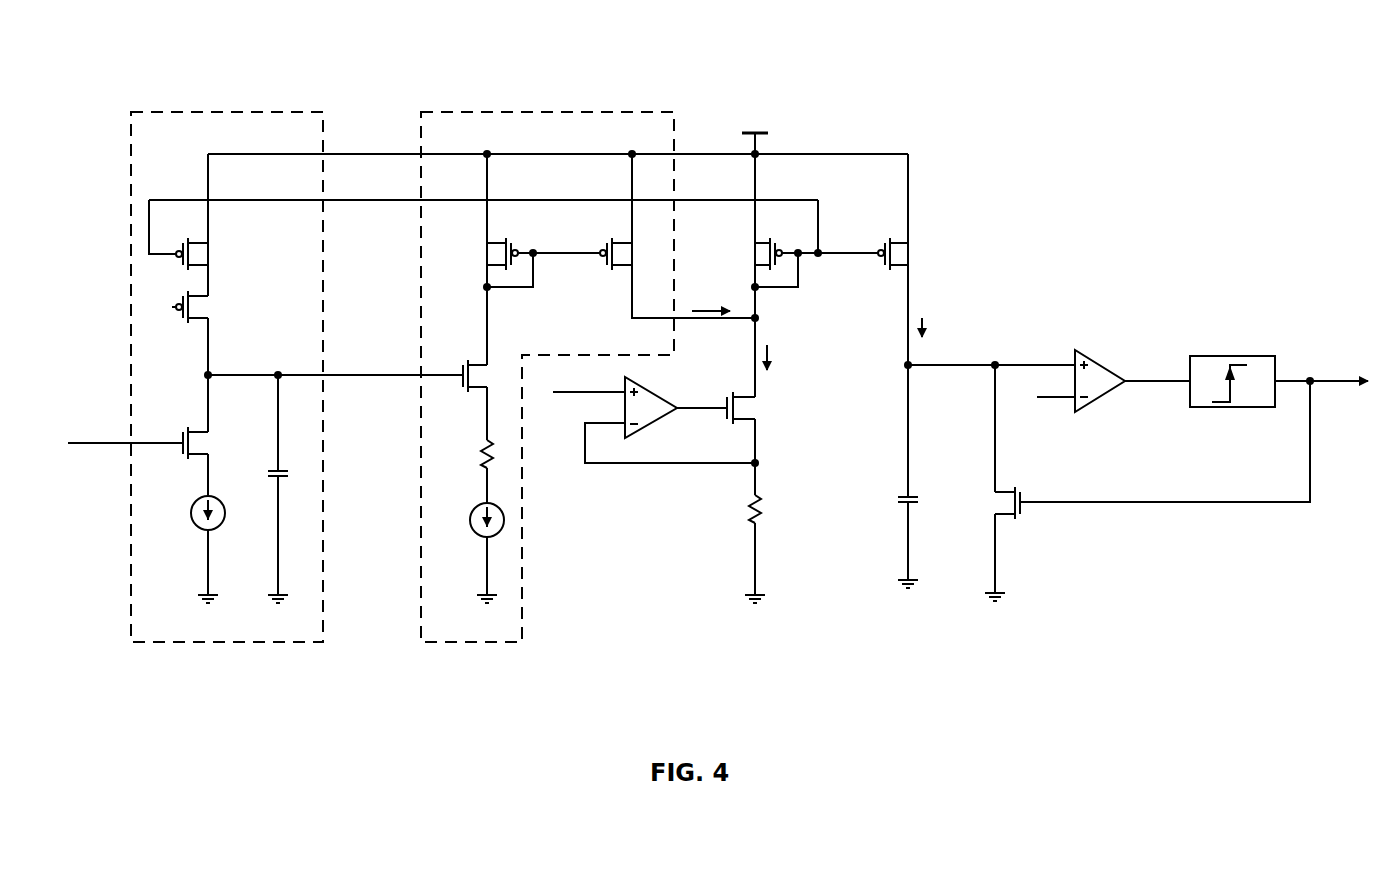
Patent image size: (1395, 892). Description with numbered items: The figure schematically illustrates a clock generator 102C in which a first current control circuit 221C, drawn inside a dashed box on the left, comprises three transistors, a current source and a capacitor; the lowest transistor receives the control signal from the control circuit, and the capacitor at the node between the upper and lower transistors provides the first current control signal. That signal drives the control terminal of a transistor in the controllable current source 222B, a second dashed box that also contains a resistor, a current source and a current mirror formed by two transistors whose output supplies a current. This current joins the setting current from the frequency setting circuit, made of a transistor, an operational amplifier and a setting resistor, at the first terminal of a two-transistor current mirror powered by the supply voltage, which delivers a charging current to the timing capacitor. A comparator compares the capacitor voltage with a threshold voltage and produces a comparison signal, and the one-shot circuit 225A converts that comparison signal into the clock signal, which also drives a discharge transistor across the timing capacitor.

The clock generator 102C is at (1250, 140).
The first current control circuit 221C is at (160, 643).
The controllable current source 222B is at (443, 643).
The one-shot circuit 225A is at (1214, 407).